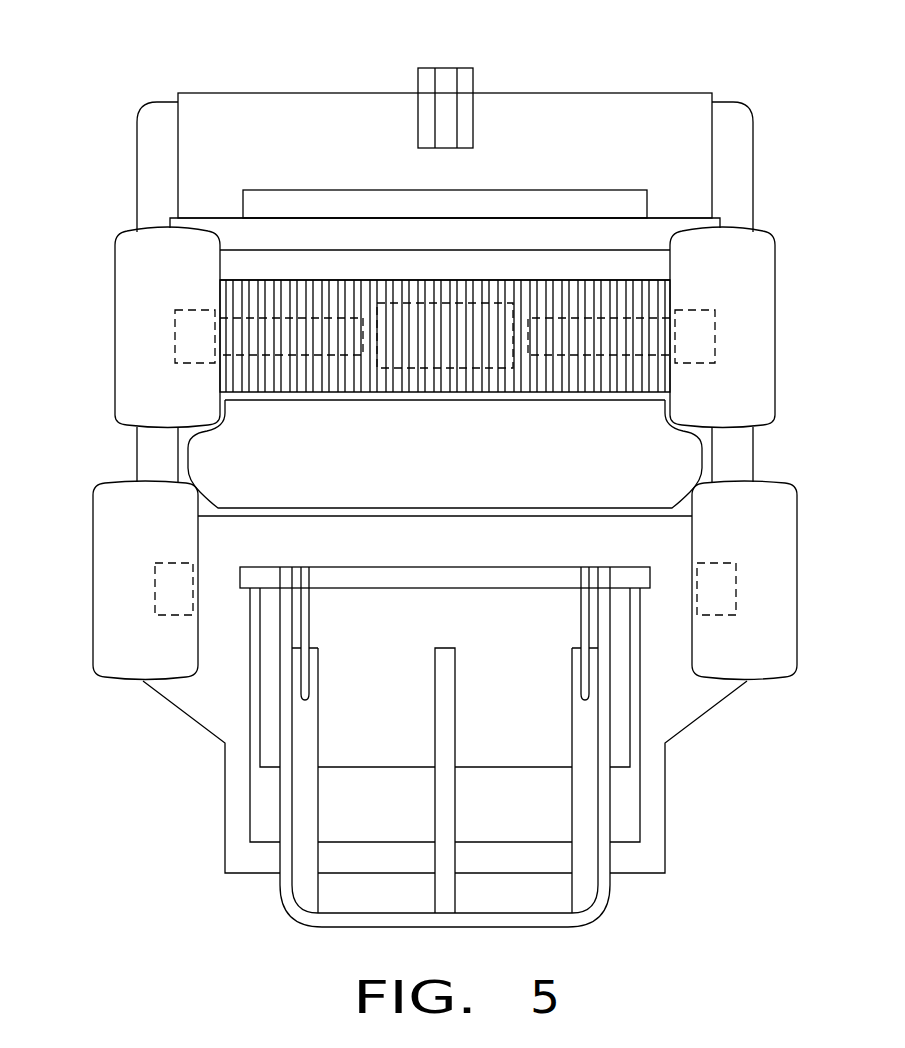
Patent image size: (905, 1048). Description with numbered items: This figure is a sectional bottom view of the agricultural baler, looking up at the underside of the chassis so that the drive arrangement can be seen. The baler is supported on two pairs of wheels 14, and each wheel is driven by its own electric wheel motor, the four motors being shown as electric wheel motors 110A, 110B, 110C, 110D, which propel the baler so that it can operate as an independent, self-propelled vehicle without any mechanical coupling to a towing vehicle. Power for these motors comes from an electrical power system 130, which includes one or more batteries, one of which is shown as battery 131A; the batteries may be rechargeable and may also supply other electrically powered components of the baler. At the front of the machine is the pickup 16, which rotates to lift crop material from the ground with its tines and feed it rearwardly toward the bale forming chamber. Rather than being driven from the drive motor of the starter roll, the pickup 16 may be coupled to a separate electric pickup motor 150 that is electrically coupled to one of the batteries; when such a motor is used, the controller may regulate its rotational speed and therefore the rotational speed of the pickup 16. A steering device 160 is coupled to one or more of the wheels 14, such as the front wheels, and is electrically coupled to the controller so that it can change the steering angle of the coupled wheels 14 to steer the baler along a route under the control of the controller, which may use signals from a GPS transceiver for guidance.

The heat exchanger 16 is at (557, 275).
The fins 160 is at (268, 318).
The central fin section 150 is at (477, 303).
The tanks 14 is at (115, 358).
The sensor 110A is at (175, 335).
The sensor 110B is at (715, 316).
The sensor 110C is at (155, 590).
The sensor 110D is at (736, 590).
The connecting neck 130 is at (181, 455).
The housing body portion 131A is at (701, 462).